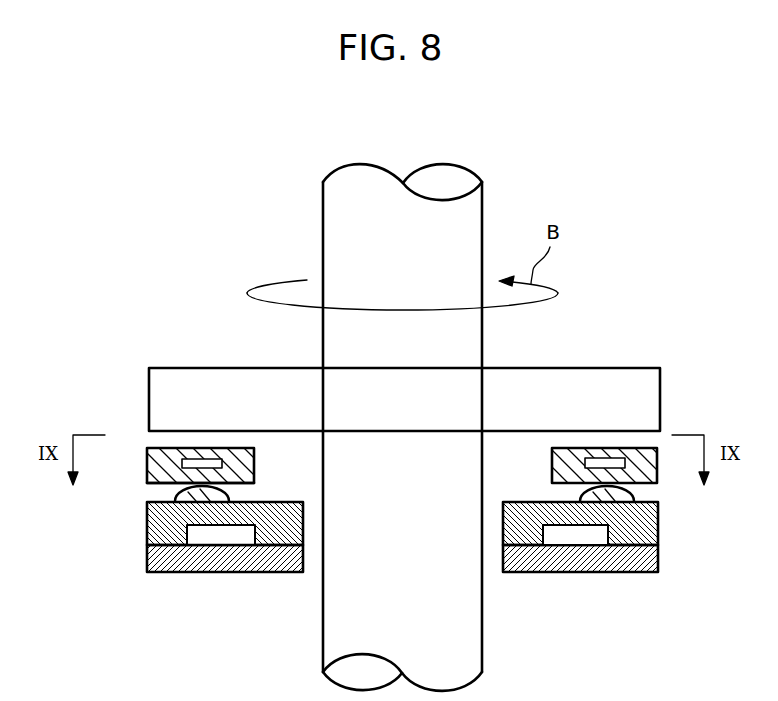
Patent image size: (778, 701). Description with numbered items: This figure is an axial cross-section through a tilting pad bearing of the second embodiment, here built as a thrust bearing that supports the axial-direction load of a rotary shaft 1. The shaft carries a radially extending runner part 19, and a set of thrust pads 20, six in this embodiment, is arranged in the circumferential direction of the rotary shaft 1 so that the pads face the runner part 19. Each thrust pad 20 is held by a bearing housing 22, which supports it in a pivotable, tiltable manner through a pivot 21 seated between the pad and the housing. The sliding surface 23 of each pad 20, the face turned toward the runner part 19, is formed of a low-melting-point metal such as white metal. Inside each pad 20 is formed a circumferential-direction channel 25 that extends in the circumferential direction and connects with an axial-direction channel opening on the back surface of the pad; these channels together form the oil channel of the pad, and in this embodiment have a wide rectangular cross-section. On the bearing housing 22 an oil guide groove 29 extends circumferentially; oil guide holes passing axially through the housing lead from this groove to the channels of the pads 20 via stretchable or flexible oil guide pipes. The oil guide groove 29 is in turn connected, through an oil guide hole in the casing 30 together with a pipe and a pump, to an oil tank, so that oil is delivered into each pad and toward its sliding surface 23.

The rotary shaft 1 is at (335, 237).
The runner part 19 is at (188, 378).
The thrust pad 20 is at (150, 478).
The pivot 21 is at (200, 492).
The bearing housing 22 is at (273, 540).
The sliding surface 23 is at (165, 447).
The circumferential-direction channel 25 is at (605, 463).
The oil guide groove 29 is at (575, 538).
The casing 30 is at (172, 572).